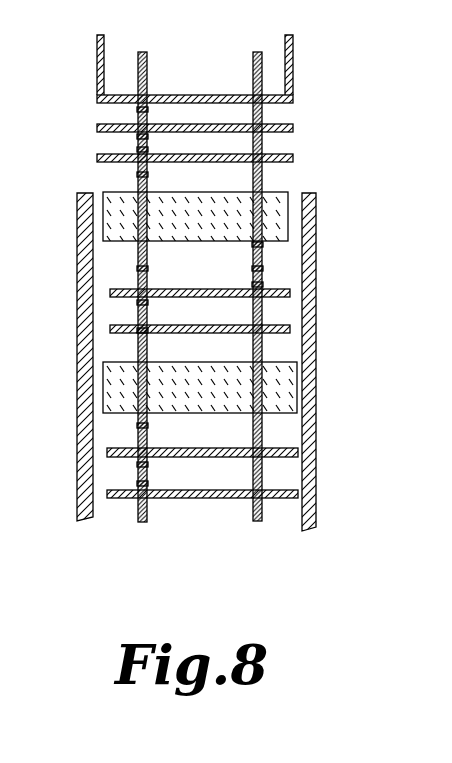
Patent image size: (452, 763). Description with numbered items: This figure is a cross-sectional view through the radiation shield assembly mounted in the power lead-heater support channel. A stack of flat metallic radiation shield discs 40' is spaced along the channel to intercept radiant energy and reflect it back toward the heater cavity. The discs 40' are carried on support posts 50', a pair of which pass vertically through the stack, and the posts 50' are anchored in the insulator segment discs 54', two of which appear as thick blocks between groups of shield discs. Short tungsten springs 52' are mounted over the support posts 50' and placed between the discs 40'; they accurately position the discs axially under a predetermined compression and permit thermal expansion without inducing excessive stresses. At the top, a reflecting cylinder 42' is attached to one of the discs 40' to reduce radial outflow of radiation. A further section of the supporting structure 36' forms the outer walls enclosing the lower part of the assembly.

The supporting structure 36' is at (215, 362).
The radiation shield disc 40' is at (218, 323).
The reflecting cylinder 42' is at (218, 65).
The support post 50' is at (200, 271).
The tungsten spring 52' is at (192, 301).
The insulator segment disc 54' is at (229, 280).